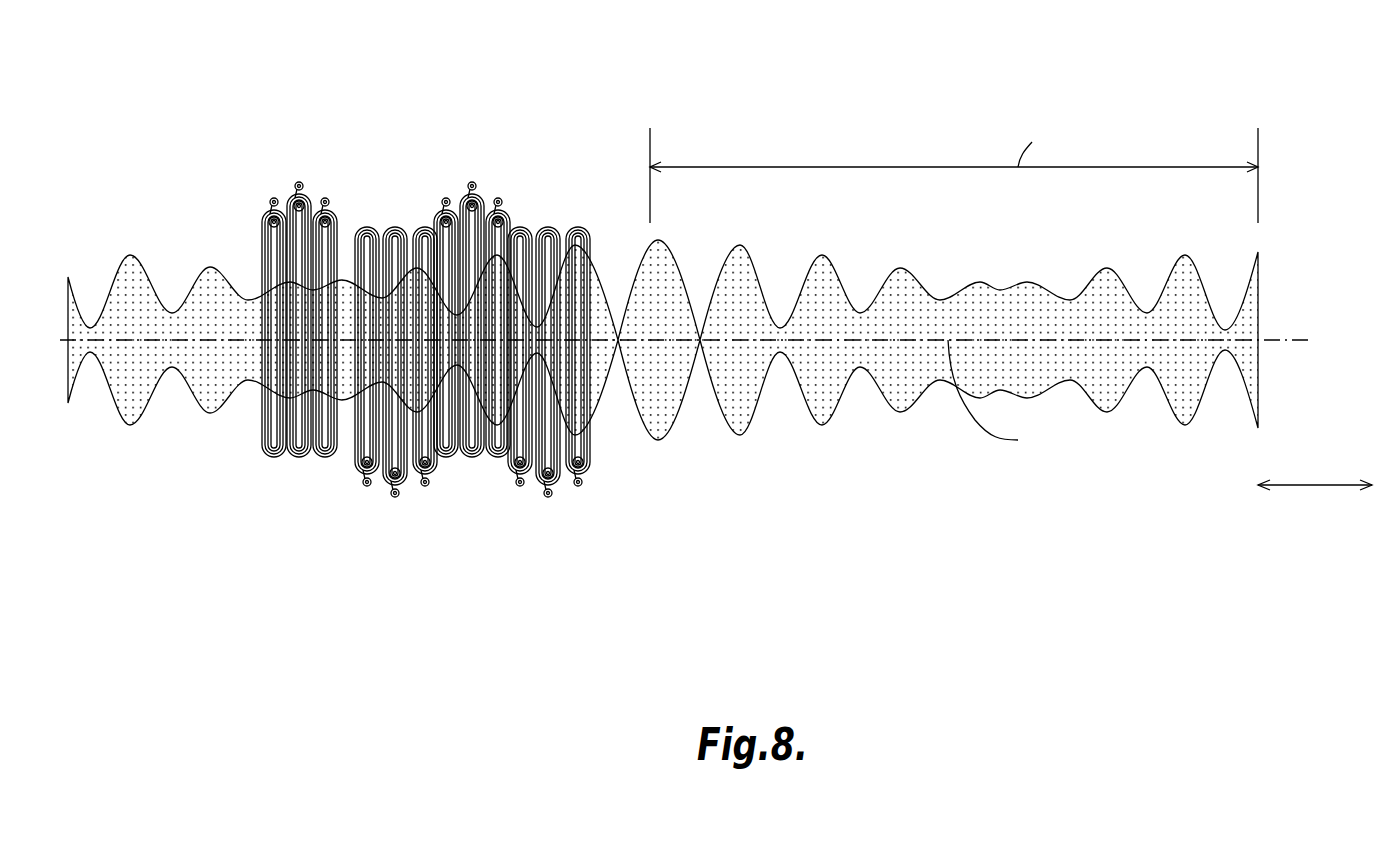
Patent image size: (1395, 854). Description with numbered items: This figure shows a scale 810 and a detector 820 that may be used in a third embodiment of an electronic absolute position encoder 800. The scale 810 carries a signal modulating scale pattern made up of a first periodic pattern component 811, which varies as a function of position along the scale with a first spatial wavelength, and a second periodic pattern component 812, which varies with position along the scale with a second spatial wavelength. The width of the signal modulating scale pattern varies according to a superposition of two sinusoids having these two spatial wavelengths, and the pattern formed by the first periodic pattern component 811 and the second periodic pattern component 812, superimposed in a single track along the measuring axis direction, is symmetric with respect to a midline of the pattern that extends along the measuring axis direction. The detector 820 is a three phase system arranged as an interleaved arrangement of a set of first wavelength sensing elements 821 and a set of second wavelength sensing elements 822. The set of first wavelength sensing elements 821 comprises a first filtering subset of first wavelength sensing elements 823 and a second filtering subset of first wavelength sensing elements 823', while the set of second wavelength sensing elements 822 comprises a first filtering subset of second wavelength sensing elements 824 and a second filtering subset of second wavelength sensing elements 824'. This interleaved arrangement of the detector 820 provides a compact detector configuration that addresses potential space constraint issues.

The electronic absolute position encoder 800 is at (1223, 92).
The scale 810 is at (1259, 375).
The first periodic pattern component 811 is at (722, 318).
The second periodic pattern component 812 is at (720, 318).
The detector 820 is at (570, 113).
The set of first wavelength sensing elements 821 is at (255, 120).
The set of second wavelength sensing elements 822 is at (345, 562).
The first filtering subset of first wavelength sensing elements 823 is at (296, 281).
The second filtering subset of first wavelength sensing elements 823' is at (474, 281).
The first filtering subset of second wavelength sensing elements 824 is at (393, 401).
The second filtering subset of second wavelength sensing elements 824' is at (550, 401).